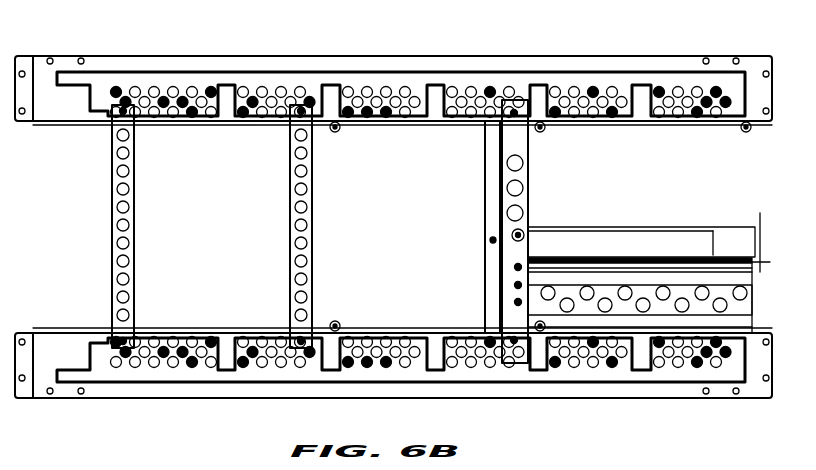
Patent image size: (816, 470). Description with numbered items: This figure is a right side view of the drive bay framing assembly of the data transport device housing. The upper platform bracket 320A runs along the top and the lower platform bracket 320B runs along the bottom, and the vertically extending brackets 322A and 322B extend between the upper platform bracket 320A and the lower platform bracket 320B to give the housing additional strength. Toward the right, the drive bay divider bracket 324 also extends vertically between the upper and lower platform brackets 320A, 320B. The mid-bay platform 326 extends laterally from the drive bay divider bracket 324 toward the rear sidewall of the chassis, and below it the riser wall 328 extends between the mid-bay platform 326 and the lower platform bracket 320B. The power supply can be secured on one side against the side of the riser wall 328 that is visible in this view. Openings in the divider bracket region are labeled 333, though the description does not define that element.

The upper platform bracket 320A is at (627, 62).
The lower platform bracket 320B is at (626, 388).
The vertically extending bracket 322A is at (134, 232).
The vertically extending bracket 322B is at (291, 220).
The drive bay divider bracket 324 is at (490, 213).
The mid-bay platform 326 is at (718, 232).
The riser wall 328 is at (735, 304).
The holes 333 is at (526, 177).